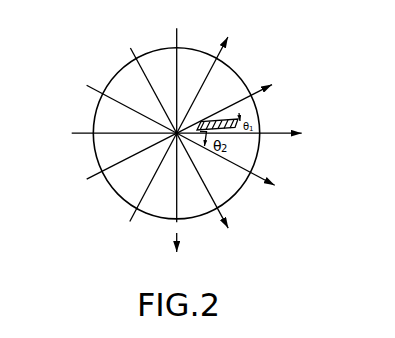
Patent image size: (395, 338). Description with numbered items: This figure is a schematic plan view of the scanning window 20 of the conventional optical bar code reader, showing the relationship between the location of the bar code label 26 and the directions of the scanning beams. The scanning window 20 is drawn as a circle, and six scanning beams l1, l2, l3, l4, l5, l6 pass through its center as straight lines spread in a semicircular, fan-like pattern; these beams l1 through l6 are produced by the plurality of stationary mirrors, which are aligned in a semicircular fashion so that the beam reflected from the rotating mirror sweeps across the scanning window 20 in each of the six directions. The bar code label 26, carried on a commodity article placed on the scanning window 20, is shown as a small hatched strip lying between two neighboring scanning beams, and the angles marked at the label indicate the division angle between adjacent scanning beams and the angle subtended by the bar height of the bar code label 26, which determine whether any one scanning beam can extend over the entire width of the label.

The scanning window 20 is at (106, 85).
The bar code label 26 is at (242, 118).
The scanning beam l1 is at (216, 56).
The scanning beam l2 is at (257, 88).
The scanning beam l3 is at (266, 134).
The scanning beam l4 is at (258, 178).
The scanning beam l5 is at (218, 211).
The scanning beam l6 is at (178, 222).